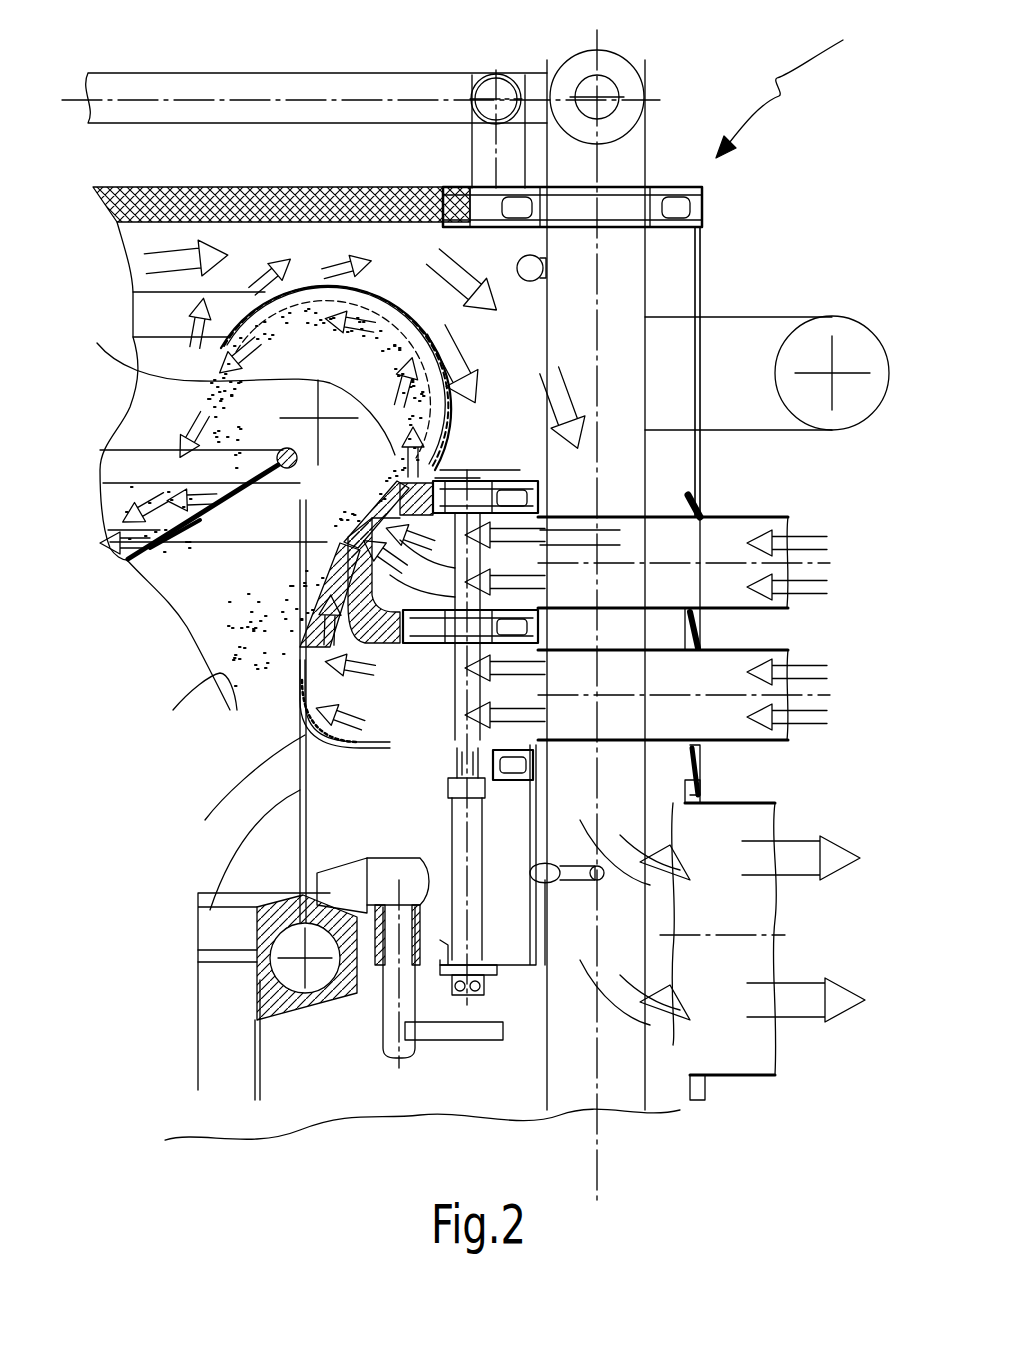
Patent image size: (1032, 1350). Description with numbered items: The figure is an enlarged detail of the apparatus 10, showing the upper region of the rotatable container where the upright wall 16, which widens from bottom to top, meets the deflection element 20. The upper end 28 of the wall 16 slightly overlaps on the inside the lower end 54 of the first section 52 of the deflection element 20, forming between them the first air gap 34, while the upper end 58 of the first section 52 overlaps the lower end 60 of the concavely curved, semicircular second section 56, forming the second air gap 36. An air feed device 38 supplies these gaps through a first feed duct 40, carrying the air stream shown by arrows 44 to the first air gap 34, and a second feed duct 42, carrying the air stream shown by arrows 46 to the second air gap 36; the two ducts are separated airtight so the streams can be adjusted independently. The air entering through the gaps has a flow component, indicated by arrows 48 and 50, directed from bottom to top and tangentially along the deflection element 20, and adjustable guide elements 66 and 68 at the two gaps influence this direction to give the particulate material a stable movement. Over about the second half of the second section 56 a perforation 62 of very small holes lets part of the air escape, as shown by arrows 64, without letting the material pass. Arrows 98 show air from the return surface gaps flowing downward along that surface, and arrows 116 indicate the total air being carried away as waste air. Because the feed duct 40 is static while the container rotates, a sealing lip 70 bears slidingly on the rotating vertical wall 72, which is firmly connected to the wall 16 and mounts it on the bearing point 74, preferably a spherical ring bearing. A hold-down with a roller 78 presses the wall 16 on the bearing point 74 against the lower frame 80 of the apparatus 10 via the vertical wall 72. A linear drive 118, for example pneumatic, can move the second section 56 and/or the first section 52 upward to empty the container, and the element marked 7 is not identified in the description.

The apparatus 10 is at (796, 87).
The deflection element 20 is at (378, 280).
The arrows (air escaping through perforation) 64 is at (262, 272).
The perforation 62 is at (318, 300).
The second section 56 is at (410, 345).
The upper end of the first section 58 is at (332, 422).
The first section 52 is at (302, 468).
The arrows (flow component at first air gap) 48 is at (365, 514).
The second air gap 36 is at (104, 349).
The arrows (air through return surface gaps) 98 is at (120, 530).
The first air gap 34 is at (336, 542).
The upper end of the wall 28 is at (333, 562).
The wall 16 is at (222, 680).
The guide elements 66 is at (322, 652).
The sealing lip 70 is at (300, 735).
The vertical wall 72 is at (300, 788).
The roller 78 is at (330, 878).
The bearing point 74 is at (285, 962).
The lower frame 80 is at (238, 1070).
The rod 7 is at (395, 1000).
The arrows (waste air) 116 is at (640, 1060).
The linear drive 118 is at (476, 882).
The arrows (flow component at second air gap) 50 is at (440, 474).
The lower end of the second section 60 is at (482, 480).
The lower end of the first section 54 is at (410, 574).
The guide elements 68 is at (560, 547).
The second feed duct 42 is at (702, 547).
The arrows (air stream in second feed duct) 46 is at (785, 545).
The arrows (air stream in first feed duct) 44 is at (560, 670).
The first feed duct 40 is at (706, 682).
The air feed device 38 is at (820, 627).